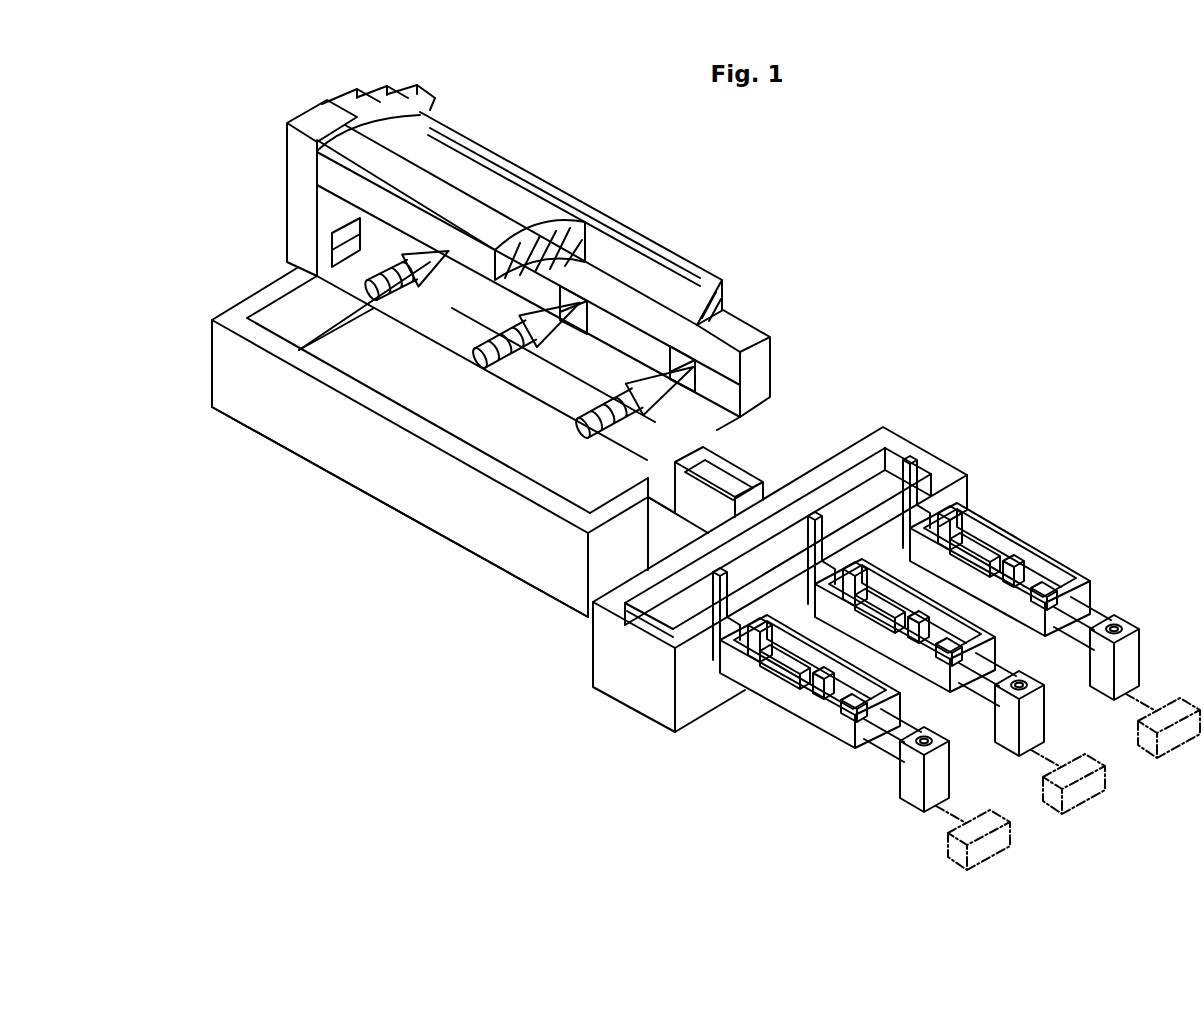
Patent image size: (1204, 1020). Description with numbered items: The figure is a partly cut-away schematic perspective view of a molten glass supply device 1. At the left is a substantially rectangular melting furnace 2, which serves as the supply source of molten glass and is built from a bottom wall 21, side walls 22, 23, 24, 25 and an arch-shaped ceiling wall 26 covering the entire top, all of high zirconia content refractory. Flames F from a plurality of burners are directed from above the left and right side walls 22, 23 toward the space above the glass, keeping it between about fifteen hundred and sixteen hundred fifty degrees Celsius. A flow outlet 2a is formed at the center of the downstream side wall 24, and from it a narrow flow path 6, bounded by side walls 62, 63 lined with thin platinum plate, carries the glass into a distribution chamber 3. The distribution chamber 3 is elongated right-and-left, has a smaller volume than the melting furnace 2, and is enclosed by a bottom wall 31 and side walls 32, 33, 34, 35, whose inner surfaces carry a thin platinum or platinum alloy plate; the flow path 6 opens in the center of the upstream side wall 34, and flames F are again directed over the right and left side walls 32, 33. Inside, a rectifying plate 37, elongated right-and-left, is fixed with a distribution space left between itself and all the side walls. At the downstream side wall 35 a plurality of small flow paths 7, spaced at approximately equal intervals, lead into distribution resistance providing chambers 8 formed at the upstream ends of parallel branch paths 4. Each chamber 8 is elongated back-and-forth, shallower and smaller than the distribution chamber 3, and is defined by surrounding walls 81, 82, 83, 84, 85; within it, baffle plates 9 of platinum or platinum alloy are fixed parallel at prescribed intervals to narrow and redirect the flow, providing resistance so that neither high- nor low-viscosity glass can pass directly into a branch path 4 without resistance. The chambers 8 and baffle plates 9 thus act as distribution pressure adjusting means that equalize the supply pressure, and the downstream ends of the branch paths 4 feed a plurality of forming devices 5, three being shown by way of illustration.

The molten glass supply device 1 is at (762, 181).
The melting furnace 2 is at (460, 439).
The flow outlet 2a is at (667, 478).
The bottom wall 21 is at (407, 386).
The side wall 22 is at (387, 493).
The side wall 23 is at (560, 371).
The side wall 24 is at (617, 510).
The side wall 25 is at (330, 315).
The arch-shaped ceiling wall 26 is at (510, 210).
The distribution chamber 3 is at (782, 580).
The bottom wall 31 is at (870, 498).
The side wall 32 is at (620, 610).
The side wall 33 is at (937, 465).
The upstream side wall 34 is at (842, 460).
The downstream side wall 35 is at (887, 502).
The rectifying plate 37 is at (687, 594).
The branch path 4 is at (888, 760).
The forming device 5 is at (978, 803).
The flow path 6 is at (652, 526).
The side wall 62 is at (665, 537).
The side wall 63 is at (738, 490).
The small flow path 7 is at (910, 523).
The distribution resistance providing chamber 8 is at (915, 632).
The surrounding wall 81 is at (1040, 543).
The surrounding wall 82 is at (977, 582).
The surrounding wall 83 is at (1000, 553).
The surrounding wall 84 is at (1067, 608).
The surrounding wall 85 is at (1082, 572).
The baffle plate 9 is at (768, 662).
The flames F is at (425, 282).